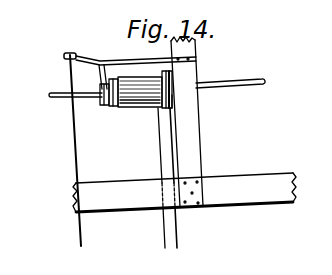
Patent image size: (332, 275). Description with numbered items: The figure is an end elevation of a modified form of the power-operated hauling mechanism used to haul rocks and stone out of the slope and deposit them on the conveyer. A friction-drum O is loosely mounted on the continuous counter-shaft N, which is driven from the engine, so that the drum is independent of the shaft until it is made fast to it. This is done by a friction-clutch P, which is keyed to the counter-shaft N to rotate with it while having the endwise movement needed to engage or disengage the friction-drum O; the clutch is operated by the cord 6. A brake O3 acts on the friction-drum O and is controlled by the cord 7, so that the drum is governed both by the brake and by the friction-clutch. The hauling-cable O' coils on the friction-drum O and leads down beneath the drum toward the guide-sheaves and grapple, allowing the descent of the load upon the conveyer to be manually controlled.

The cord 6 is at (76, 141).
The friction-clutch P is at (114, 103).
The friction-drum O is at (140, 99).
The brake O3 is at (160, 107).
The frame plate A is at (193, 122).
The counter-shaft N is at (238, 83).
The hauling-cable O' is at (158, 187).
The cord 7 is at (178, 232).